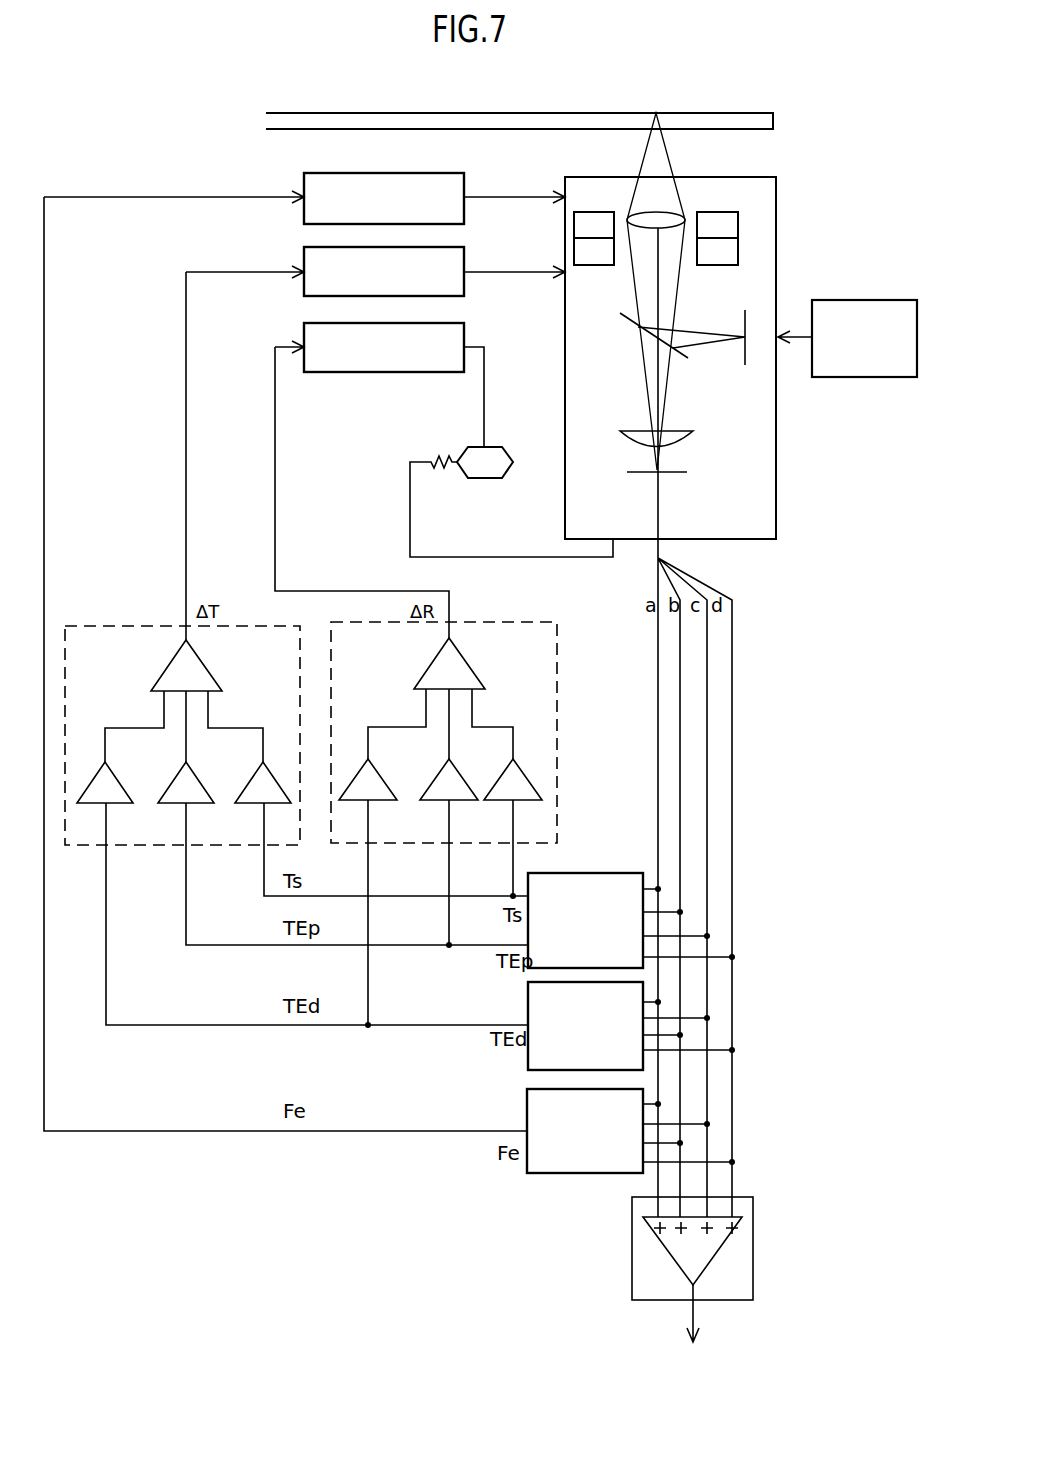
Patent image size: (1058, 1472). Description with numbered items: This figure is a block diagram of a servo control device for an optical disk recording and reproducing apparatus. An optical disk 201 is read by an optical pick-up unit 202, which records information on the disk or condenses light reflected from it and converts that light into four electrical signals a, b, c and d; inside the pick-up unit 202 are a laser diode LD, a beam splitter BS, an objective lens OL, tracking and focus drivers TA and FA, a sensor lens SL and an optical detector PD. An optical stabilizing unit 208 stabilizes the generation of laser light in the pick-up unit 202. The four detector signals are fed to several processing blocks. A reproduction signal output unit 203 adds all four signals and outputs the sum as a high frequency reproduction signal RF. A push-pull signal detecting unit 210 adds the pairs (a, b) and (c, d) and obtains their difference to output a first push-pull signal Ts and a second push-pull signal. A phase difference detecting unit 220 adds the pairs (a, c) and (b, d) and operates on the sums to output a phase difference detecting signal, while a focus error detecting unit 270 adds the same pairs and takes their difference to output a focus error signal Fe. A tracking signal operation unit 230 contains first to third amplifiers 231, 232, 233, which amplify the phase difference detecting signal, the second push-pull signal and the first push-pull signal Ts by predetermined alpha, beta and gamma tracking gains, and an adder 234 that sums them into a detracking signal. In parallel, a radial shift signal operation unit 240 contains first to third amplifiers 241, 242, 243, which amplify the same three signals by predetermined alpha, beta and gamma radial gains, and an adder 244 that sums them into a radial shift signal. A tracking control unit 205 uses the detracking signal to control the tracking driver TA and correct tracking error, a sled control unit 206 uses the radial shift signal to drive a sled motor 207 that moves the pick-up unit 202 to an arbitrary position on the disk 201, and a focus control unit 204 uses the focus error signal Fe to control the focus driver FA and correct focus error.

The optical disk 201 is at (763, 121).
The optical pick-up unit 202 is at (765, 276).
The reproduction signal output unit 203 is at (747, 1242).
The focus control unit 204 is at (368, 176).
The tracking control unit 205 is at (462, 288).
The sled control unit 206 is at (410, 375).
The sled motor 207 is at (487, 478).
The optical stabilizing unit 208 is at (865, 378).
The push-pull signal detecting unit 210 is at (583, 873).
The phase difference detecting unit 220 is at (532, 1052).
The tracking signal operation unit 230 is at (100, 626).
The first amplifier 231 is at (103, 773).
The second amplifier 232 is at (183, 773).
The third amplifier 233 is at (259, 773).
The adder 234 is at (198, 668).
The radial shift signal operation unit 240 is at (533, 622).
The first amplifier 241 is at (366, 769).
The second amplifier 242 is at (446, 769).
The third amplifier 243 is at (508, 769).
The adder 244 is at (460, 663).
The focus error detecting unit 270 is at (562, 1173).